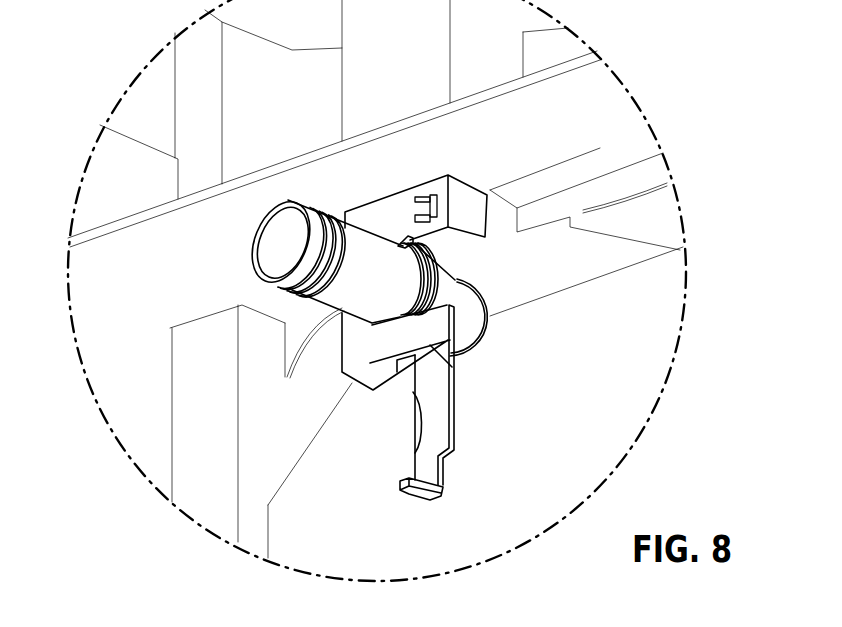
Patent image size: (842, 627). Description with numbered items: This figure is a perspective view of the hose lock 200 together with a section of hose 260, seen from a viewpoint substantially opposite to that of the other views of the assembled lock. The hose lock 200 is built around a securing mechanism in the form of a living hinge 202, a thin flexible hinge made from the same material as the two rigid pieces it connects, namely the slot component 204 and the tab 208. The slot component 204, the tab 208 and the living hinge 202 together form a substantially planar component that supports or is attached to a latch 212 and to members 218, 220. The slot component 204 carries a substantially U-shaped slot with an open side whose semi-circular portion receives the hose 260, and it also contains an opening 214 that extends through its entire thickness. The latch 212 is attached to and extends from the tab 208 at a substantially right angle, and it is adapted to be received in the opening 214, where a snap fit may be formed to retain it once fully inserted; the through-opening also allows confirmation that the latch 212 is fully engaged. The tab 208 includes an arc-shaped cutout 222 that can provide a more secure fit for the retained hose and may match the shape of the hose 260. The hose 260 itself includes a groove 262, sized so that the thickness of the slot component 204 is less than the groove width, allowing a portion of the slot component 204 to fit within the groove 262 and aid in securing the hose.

The hose lock 200 is at (506, 254).
The living hinge 202 is at (450, 365).
The slot component 204 is at (353, 347).
The tab 208 is at (413, 434).
The latch 212 is at (422, 497).
The opening 214 is at (430, 200).
The member 218 is at (385, 367).
The member 220 is at (460, 212).
The cutout 222 is at (413, 427).
The hose 260 is at (277, 239).
The groove 262 is at (412, 281).